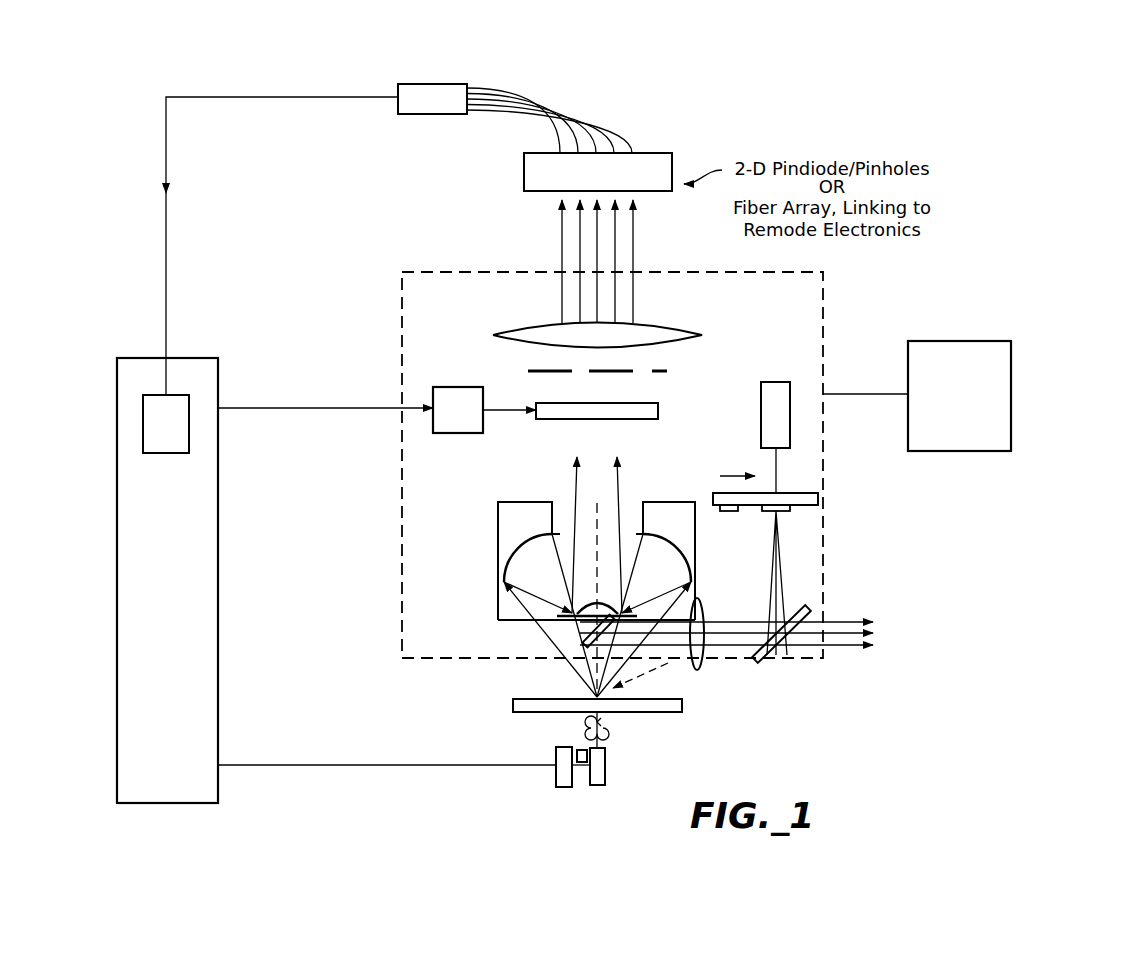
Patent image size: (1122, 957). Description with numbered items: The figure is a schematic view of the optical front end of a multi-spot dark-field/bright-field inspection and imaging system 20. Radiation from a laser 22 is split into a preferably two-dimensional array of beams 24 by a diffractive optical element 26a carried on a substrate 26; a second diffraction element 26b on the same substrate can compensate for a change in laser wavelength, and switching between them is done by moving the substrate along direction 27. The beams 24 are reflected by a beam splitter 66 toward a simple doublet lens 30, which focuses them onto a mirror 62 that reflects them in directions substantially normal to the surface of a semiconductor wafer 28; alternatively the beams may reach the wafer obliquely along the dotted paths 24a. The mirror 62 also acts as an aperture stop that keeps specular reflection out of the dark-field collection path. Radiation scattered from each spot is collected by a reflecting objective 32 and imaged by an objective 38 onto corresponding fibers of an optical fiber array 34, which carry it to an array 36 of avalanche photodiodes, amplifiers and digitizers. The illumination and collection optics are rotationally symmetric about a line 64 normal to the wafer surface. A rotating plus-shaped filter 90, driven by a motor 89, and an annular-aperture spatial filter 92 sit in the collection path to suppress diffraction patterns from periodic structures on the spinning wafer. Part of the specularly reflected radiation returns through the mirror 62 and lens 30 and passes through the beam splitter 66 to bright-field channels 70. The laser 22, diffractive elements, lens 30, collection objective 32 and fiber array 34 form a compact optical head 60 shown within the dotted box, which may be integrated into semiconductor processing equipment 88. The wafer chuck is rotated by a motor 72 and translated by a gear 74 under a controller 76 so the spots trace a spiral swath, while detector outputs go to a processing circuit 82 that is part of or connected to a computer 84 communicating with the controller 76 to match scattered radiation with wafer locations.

The multi-spot dark-field/bright-field inspection and imaging system 20 is at (808, 105).
The laser 22 is at (761, 402).
The array of illumination beams 24 is at (748, 610).
The oblique illumination paths 24a is at (652, 669).
The substrate 26 is at (822, 499).
The diffractive optical element 26a is at (785, 511).
The diffraction element 26b is at (727, 511).
The direction 27 is at (737, 464).
The semiconductor wafer 28 is at (682, 708).
The simple doublet lens 30 is at (708, 667).
The reflecting objective 32 is at (493, 574).
The array of optical fibers 34 is at (604, 119).
The array of avalanche photodiodes, amplifiers, and digitizers 36 is at (430, 114).
The objective 38 is at (668, 328).
The optical head 60 is at (823, 312).
The mirror 62 is at (575, 638).
The line normal to the sample surface 64 is at (600, 512).
The beam splitter 66 is at (812, 612).
The bright-field channels 70 is at (899, 633).
The motor 72 is at (606, 768).
The gear 74 is at (580, 750).
The controller 76 is at (565, 787).
The processing circuit 82 is at (166, 424).
The computer 84 is at (167, 580).
The semiconductor processing equipment 88 is at (959, 396).
The motor 89 is at (453, 433).
The plus-shaped filter 90 is at (658, 411).
The spatial filter 92 is at (532, 370).